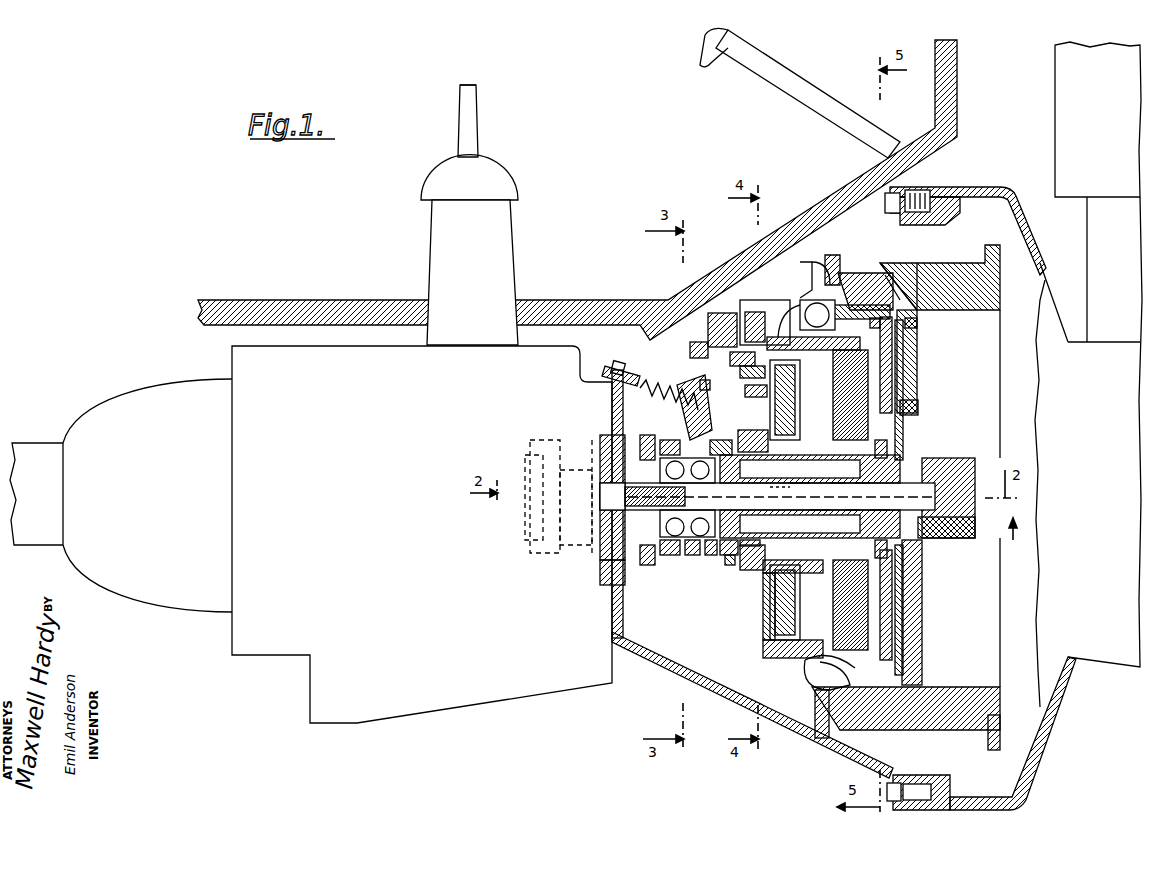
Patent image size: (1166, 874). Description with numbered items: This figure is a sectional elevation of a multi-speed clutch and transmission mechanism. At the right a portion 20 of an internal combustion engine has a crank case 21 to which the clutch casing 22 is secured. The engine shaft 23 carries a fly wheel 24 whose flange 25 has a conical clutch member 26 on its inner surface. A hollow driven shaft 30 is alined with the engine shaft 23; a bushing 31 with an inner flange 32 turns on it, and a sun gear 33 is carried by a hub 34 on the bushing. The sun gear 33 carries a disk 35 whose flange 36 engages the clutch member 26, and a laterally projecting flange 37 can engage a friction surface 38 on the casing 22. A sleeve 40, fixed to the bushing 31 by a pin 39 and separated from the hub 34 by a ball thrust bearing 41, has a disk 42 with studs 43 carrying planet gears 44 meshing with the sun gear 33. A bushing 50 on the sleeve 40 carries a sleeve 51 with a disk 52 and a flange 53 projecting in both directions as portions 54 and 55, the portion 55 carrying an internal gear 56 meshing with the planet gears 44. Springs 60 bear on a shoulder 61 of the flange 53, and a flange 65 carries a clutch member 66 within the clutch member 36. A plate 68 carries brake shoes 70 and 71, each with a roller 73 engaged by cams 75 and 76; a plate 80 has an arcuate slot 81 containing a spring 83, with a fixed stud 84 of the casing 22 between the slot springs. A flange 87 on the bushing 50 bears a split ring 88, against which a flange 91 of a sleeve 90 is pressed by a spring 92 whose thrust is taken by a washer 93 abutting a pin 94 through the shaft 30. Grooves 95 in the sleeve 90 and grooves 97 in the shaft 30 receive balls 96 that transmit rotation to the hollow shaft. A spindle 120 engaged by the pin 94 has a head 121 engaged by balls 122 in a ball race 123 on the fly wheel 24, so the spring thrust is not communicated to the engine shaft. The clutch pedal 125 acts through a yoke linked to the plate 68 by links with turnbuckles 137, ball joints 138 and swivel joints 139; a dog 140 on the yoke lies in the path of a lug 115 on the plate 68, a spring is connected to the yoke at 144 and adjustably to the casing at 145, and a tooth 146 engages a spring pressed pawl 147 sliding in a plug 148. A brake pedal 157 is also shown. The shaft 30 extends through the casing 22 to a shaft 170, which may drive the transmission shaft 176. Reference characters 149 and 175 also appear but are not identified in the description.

The portion of an internal combustion engine 20 is at (1055, 80).
The crank case 21 is at (1000, 188).
The clutch casing 22 is at (738, 696).
The engine shaft 23 is at (1010, 458).
The fly wheel 24 is at (920, 338).
The flange 25 is at (885, 280).
The conical clutch member 26 is at (905, 330).
The driven shaft 30 is at (862, 493).
The bushing 31 is at (852, 503).
The flange 32 is at (767, 496).
The sun gear 33 is at (918, 405).
The hub 34 is at (879, 442).
The disk 35 is at (917, 324).
The flange 36 is at (895, 290).
The laterally projecting flange 37 is at (865, 281).
The friction surface 38 is at (825, 262).
The pin 39 is at (782, 498).
The sleeve 40 is at (820, 502).
The ball thrust bearing 41 is at (837, 491).
The flange or disk 42 is at (880, 502).
The studs 43 is at (903, 385).
The planet gears 44 is at (892, 380).
The bushing 50 is at (800, 490).
The sleeve 51 is at (770, 455).
The flange or disk 52 is at (770, 622).
The flange 53 is at (813, 339).
The flange portion 54 is at (787, 321).
The flange portion 55 is at (870, 305).
The internal gear 56 is at (868, 372).
The springs 60 is at (796, 694).
The shoulder 61 is at (808, 666).
The peripherally extending flange 65 is at (922, 326).
The clutch member 66 is at (830, 300).
The plate 68 is at (745, 592).
The brake shoe 70 is at (742, 354).
The brake shoe 71 is at (766, 645).
The roller 73 is at (785, 500).
The cam 75 is at (756, 388).
The cam 76 is at (775, 574).
The plate 80 is at (750, 366).
The arcuate slot 81 is at (750, 312).
The spring 83 is at (722, 321).
The stud 84 is at (765, 300).
The flange 87 is at (743, 431).
The collar or split ring 88 is at (730, 567).
The sleeve 90 is at (692, 557).
The flange 91 is at (710, 557).
The spring 92 is at (648, 565).
The washer or ring 93 is at (606, 570).
The pin 94 is at (643, 437).
The grooves 95 is at (720, 438).
The balls 96 is at (612, 497).
The grooves 97 is at (655, 496).
The lug 115 is at (752, 548).
The spindle 120 is at (880, 553).
The head 121 is at (950, 470).
The balls 122 is at (930, 458).
The ball race 123 is at (925, 552).
The clutch pedal 125 is at (797, 100).
The turnbuckles 137 is at (728, 557).
The ball joints 138 is at (641, 561).
The spherical or swivel joints 139 is at (800, 496).
The extension or dog 140 is at (670, 557).
The spring connection to yoke 144 is at (672, 440).
The adjustable spring connection 145 is at (609, 363).
The tooth 146 is at (714, 380).
The spring pressed pawl or stop 147 is at (669, 395).
The plug 148 is at (697, 344).
The nut 149 is at (628, 365).
The brake pedal 157 is at (768, 82).
The shaft 170 is at (565, 455).
The mounting plate 175 is at (301, 352).
The transmission shaft 176 is at (33, 456).